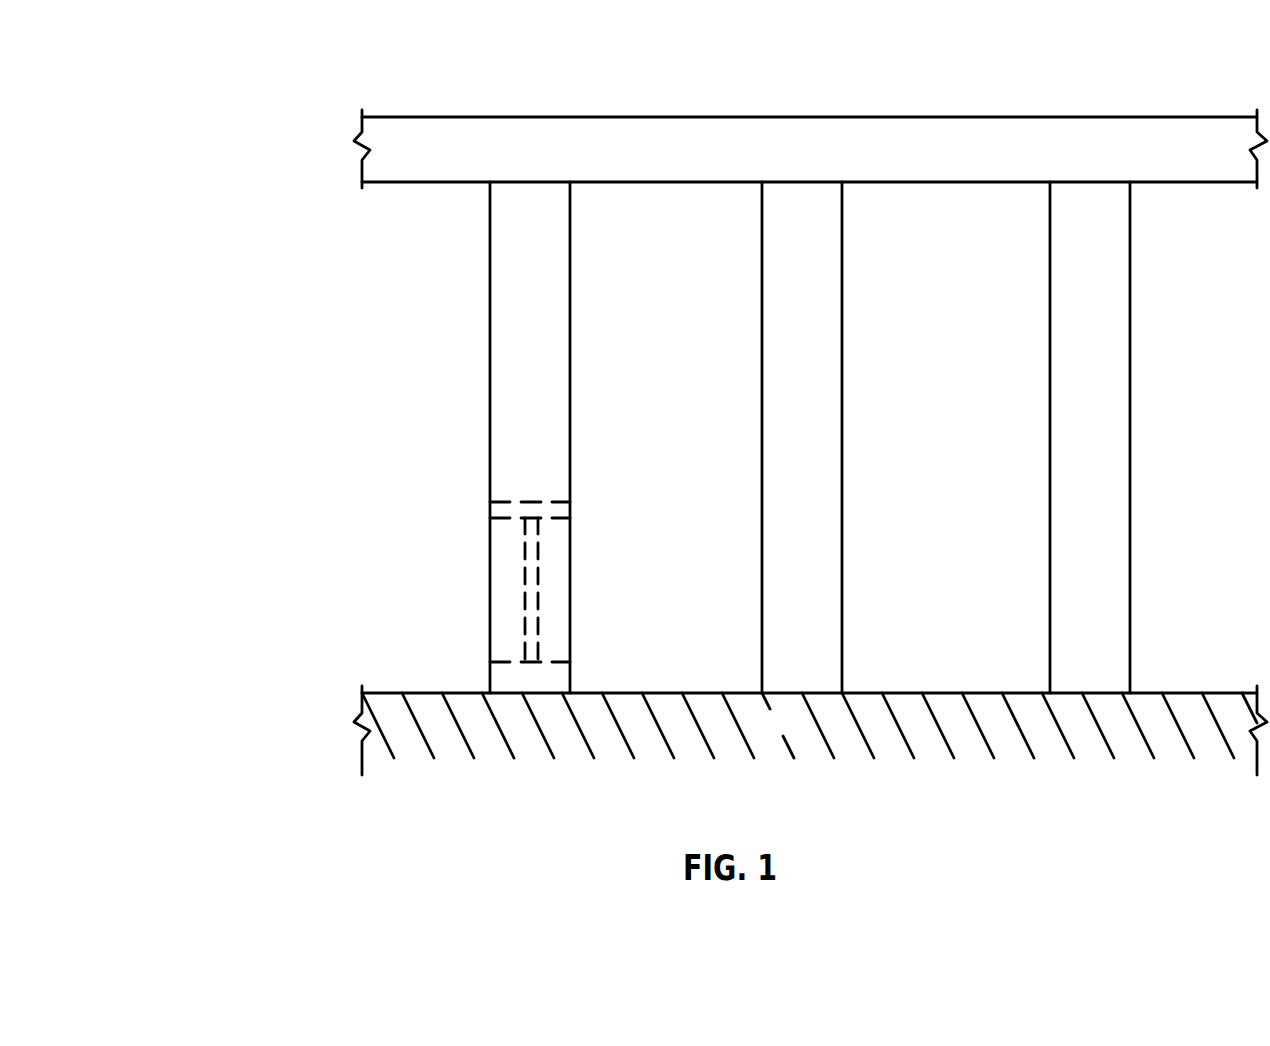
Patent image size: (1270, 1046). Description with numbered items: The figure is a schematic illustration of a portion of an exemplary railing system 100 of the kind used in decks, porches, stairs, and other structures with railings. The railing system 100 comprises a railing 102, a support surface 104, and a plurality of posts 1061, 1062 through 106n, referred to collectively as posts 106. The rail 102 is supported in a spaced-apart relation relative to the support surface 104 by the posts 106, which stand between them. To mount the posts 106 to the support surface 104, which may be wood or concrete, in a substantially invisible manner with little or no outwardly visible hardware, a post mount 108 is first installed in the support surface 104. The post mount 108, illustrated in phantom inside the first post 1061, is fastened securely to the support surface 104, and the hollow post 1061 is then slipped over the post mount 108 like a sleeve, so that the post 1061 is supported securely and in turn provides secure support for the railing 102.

The railing system 100 is at (194, 69).
The railing 102 is at (801, 158).
The support surface 104 is at (803, 731).
The posts 106 is at (810, 437).
The post 1061 is at (541, 266).
The post 1062 is at (813, 266).
The post 106n is at (1101, 266).
The post mount 108 is at (535, 587).